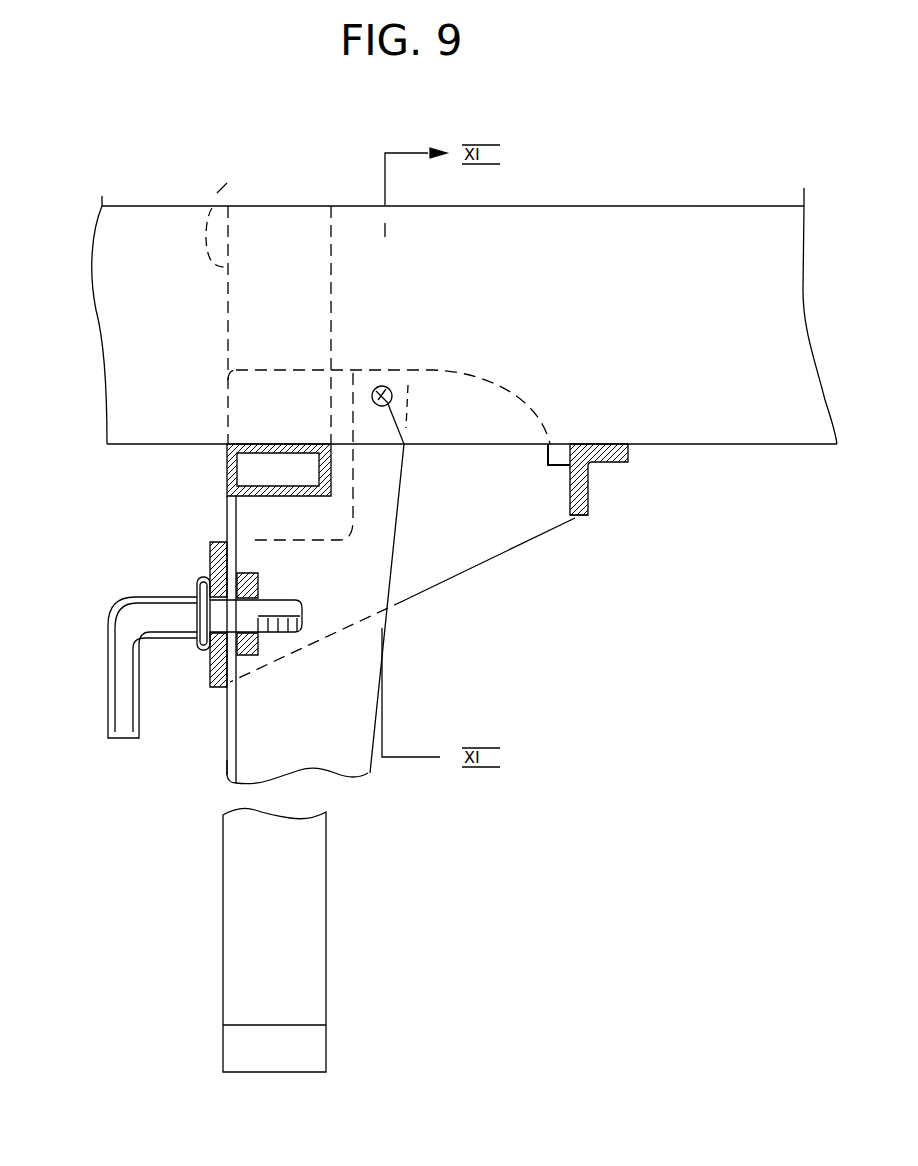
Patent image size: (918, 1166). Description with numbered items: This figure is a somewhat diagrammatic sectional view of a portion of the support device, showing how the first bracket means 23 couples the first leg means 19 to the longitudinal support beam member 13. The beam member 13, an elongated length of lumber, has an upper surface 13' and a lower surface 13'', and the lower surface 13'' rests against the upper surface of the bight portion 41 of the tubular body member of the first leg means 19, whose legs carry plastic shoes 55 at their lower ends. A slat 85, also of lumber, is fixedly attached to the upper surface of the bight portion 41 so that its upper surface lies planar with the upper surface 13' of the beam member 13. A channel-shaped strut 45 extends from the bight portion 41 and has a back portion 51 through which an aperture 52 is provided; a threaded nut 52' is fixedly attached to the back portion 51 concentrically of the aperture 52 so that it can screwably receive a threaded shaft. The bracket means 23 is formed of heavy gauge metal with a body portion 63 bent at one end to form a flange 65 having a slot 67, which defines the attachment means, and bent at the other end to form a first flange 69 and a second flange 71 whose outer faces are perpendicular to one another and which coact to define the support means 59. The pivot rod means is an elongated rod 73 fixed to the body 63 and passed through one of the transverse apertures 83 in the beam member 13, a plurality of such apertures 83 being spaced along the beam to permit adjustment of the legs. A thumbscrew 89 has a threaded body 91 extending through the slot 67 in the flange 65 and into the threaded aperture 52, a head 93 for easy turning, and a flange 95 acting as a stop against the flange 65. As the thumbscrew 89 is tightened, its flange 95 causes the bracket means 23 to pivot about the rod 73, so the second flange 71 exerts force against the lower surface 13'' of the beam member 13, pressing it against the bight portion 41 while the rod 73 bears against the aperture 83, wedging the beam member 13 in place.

The support beam member 13 is at (464, 305).
The upper surface 13' is at (650, 186).
The lower surface 13'' is at (768, 465).
The slat 85 is at (234, 175).
The transverse aperture 83 is at (391, 390).
The rod 73 is at (390, 404).
The first bracket means 23 is at (400, 588).
The bight portion 41 is at (227, 456).
The strut 45 is at (230, 742).
The back portion 51 is at (225, 750).
The flange 65 is at (210, 677).
The threaded nut 52' is at (214, 559).
The aperture 52 is at (215, 705).
The threaded body 91 is at (287, 598).
The flange 95 is at (193, 587).
The slot 67 is at (212, 620).
The thumbscrew 89 is at (78, 632).
The head 93 is at (122, 698).
The body portion 63 is at (503, 537).
The support means 59 is at (618, 480).
The second flange 71 is at (607, 444).
The first flange 69 is at (572, 495).
The first leg means 19 is at (302, 952).
The shoe 55 is at (308, 1052).